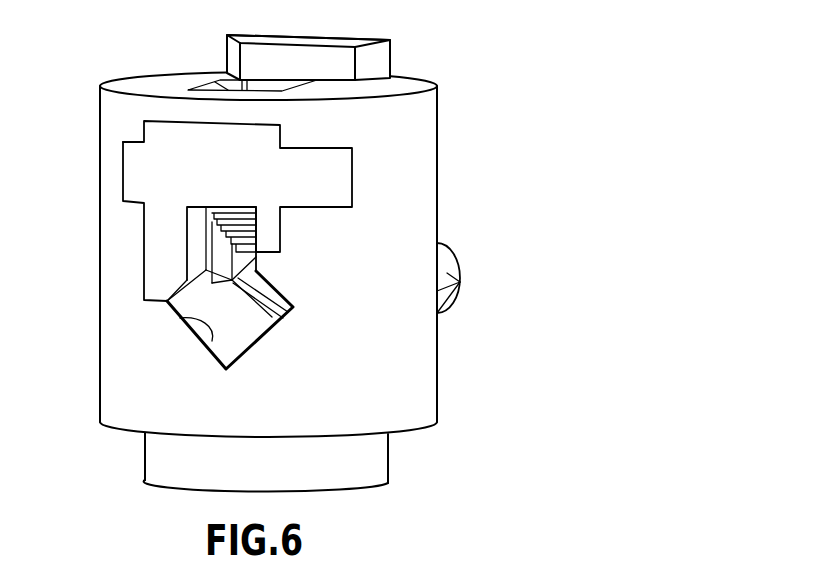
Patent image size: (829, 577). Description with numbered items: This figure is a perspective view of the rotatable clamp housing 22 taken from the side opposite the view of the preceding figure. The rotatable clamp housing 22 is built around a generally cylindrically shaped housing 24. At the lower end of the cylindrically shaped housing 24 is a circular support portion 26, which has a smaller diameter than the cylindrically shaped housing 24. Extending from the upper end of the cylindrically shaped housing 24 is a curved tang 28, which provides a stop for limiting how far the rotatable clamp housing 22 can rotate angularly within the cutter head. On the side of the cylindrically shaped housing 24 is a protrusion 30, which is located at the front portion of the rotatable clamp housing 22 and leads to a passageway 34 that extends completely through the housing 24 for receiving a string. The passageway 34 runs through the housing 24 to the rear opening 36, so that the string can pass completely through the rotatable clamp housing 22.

The rotatable clamp housing 22 is at (293, 262).
The cylindrically shaped housing 24 is at (415, 173).
The circular support portion 26 is at (175, 470).
The curved tang 28 is at (233, 57).
The protrusion 30 is at (461, 282).
The passageway 34 is at (253, 318).
The rear opening 36 is at (177, 318).